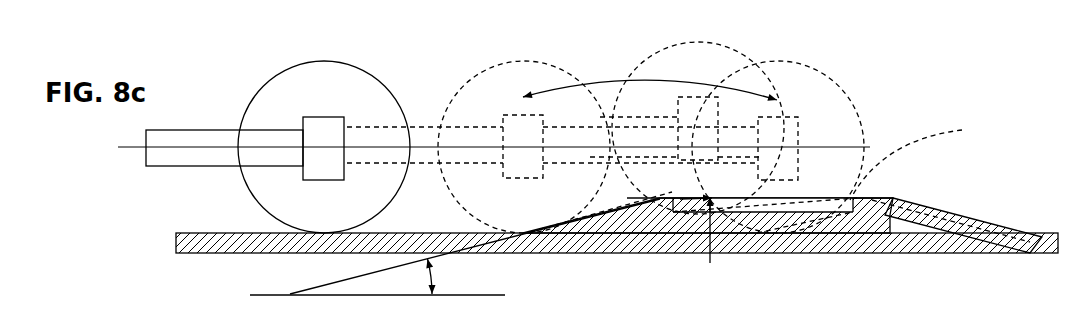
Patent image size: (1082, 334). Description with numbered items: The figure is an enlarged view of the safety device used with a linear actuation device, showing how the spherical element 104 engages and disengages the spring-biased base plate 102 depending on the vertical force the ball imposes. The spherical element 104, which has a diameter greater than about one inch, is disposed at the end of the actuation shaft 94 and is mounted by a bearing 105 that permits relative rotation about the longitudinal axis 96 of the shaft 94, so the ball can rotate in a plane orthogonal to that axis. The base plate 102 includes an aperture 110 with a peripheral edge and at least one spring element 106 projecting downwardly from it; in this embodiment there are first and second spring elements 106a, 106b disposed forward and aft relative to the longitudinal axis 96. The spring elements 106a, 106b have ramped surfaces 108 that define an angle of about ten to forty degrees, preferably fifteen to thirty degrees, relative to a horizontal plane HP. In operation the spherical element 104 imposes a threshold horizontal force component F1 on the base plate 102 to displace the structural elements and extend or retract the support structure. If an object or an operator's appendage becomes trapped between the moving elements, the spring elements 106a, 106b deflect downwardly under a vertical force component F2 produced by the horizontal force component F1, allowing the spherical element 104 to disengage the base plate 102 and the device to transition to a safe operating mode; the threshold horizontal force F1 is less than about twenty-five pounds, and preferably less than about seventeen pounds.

The longitudinal axis 96 is at (212, 147).
The actuation shaft 94 is at (290, 130).
The spring-biased base plate 102 is at (350, 62).
The bearing 105 is at (514, 110).
The ramped surfaces 108 is at (597, 213).
The aperture 110 is at (871, 197).
The spherical element 104 is at (832, 190).
The spring element 106 is at (782, 266).
The first spring element 106a is at (630, 220).
The second spring element 106b is at (927, 245).
The horizontal plane HP is at (290, 294).
The horizontal force component F1 is at (680, 200).
The vertical force component F2 is at (717, 232).